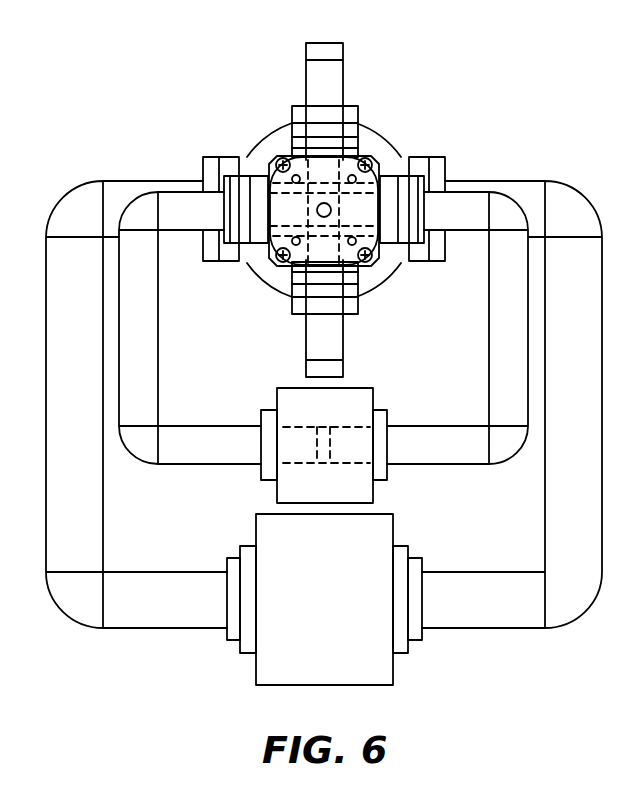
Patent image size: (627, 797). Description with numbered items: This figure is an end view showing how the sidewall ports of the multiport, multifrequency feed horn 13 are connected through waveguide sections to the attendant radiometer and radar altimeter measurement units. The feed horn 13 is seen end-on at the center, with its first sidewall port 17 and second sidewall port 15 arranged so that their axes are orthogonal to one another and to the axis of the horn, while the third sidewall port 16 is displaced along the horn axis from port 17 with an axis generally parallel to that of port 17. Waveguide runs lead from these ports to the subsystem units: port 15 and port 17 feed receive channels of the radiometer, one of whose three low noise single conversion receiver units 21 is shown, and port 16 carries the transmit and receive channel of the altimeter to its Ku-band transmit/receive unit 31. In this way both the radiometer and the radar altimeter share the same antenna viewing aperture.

The multiport, multifrequency feed horn 13 is at (377, 135).
The second sidewall port 15 is at (240, 233).
The third sidewall port 16 is at (195, 181).
The first sidewall port 17 is at (313, 140).
The low noise single conversion receiver unit 21 is at (357, 388).
The Ku-band transmit/receive unit 31 is at (393, 525).